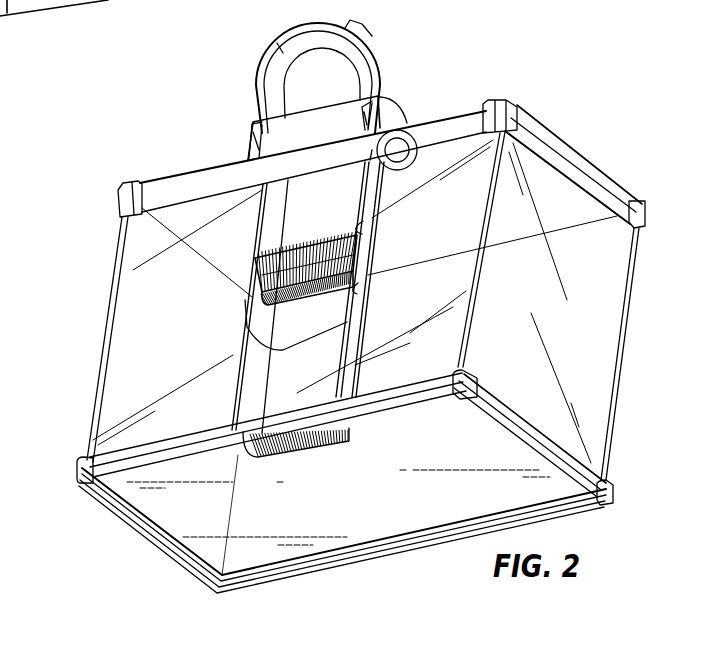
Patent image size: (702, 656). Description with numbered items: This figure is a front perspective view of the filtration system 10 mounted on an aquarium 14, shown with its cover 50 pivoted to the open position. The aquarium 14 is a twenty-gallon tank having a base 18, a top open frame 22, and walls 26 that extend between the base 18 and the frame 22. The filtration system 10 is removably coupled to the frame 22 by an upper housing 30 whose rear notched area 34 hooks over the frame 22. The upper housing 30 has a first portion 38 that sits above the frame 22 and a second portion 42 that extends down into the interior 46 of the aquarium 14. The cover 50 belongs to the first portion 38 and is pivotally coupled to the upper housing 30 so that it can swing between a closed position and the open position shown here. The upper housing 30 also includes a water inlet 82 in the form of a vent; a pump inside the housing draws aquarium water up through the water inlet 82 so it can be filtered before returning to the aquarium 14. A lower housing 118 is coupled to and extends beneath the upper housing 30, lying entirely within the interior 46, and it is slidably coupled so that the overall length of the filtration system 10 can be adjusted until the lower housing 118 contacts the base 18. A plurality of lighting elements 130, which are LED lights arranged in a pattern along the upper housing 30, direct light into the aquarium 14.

The filtration system 10 is at (372, 28).
The aquarium 14 is at (73, 18).
The base 18 is at (127, 517).
The top open frame 22 is at (158, 193).
The walls 26 is at (130, 322).
The upper housing 30 is at (241, 135).
The rear notched area 34 is at (385, 105).
The first portion 38 is at (250, 128).
The second portion 42 is at (305, 203).
The interior 46 is at (597, 305).
The cover 50 is at (295, 82).
The water inlet 82 is at (292, 274).
The lower housing 118 is at (247, 397).
The lighting elements 130 is at (440, 133).